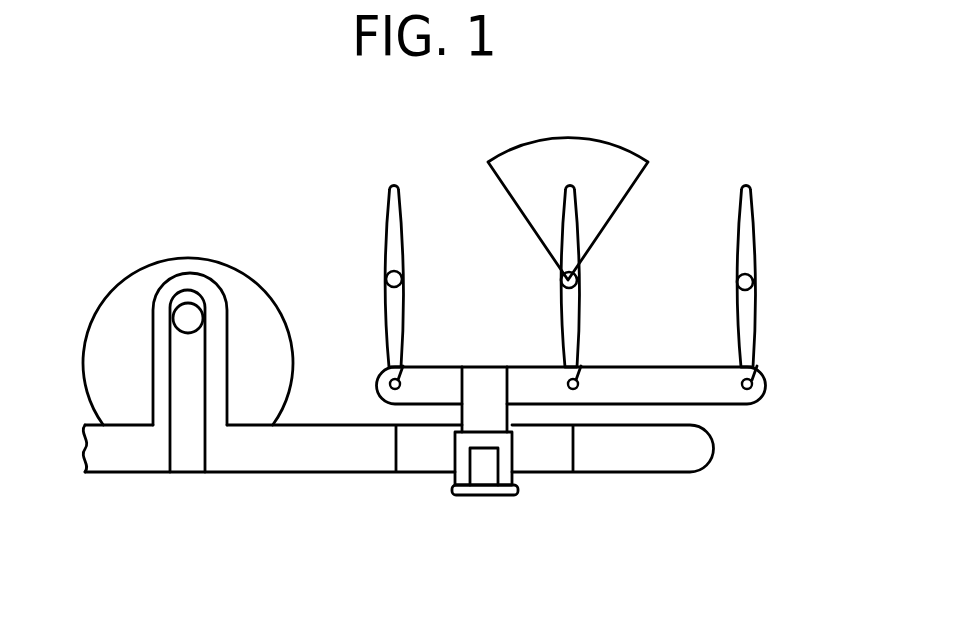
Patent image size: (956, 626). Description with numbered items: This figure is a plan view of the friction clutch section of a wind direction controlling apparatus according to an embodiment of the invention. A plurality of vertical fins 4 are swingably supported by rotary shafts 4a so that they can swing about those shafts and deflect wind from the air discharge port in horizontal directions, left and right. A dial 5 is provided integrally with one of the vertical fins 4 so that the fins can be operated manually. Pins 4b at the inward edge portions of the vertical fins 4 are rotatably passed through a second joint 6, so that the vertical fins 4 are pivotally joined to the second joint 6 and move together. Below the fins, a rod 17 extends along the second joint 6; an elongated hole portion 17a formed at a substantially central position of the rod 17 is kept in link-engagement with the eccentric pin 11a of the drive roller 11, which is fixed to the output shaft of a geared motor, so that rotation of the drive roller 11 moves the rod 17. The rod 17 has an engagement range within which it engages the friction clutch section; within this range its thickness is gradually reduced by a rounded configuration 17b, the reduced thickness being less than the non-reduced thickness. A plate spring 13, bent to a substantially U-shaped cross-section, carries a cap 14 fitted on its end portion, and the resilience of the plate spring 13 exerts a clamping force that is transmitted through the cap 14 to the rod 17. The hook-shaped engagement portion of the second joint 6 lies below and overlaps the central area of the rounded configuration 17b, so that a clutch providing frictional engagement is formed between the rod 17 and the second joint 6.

The vertical fins 4 is at (399, 194).
The rotary shafts 4a is at (386, 279).
The pins 4b is at (398, 381).
The dials 5 is at (626, 147).
The second joint 6 is at (766, 386).
The drive roller 11 is at (181, 257).
The eccentric pin 11a is at (188, 334).
The plate spring 13 is at (485, 496).
The cap 14 is at (455, 453).
The rod 17 is at (314, 473).
The elongated hole portion 17a is at (202, 410).
The rounded configuration 17b is at (548, 475).